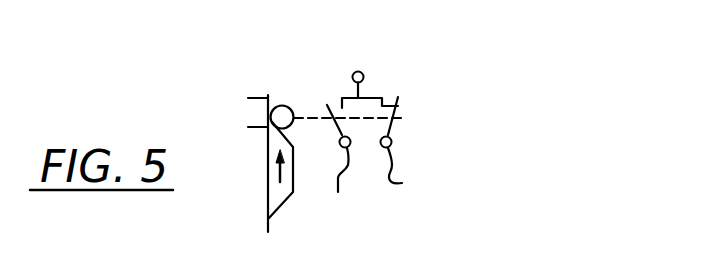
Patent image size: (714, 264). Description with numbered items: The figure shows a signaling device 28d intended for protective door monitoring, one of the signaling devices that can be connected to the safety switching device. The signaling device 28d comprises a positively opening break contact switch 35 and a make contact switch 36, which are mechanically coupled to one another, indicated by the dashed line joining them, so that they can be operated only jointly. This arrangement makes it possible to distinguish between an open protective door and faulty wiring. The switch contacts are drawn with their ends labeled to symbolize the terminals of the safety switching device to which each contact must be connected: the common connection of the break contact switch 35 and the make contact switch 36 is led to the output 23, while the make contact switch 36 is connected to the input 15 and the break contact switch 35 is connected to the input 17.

The make contact switch 36 is at (327, 110).
The output 23 is at (358, 72).
The positively opening break contact switch 35 is at (398, 106).
The signaling device 28d is at (452, 134).
The input 15 is at (336, 178).
The input 17 is at (409, 150).